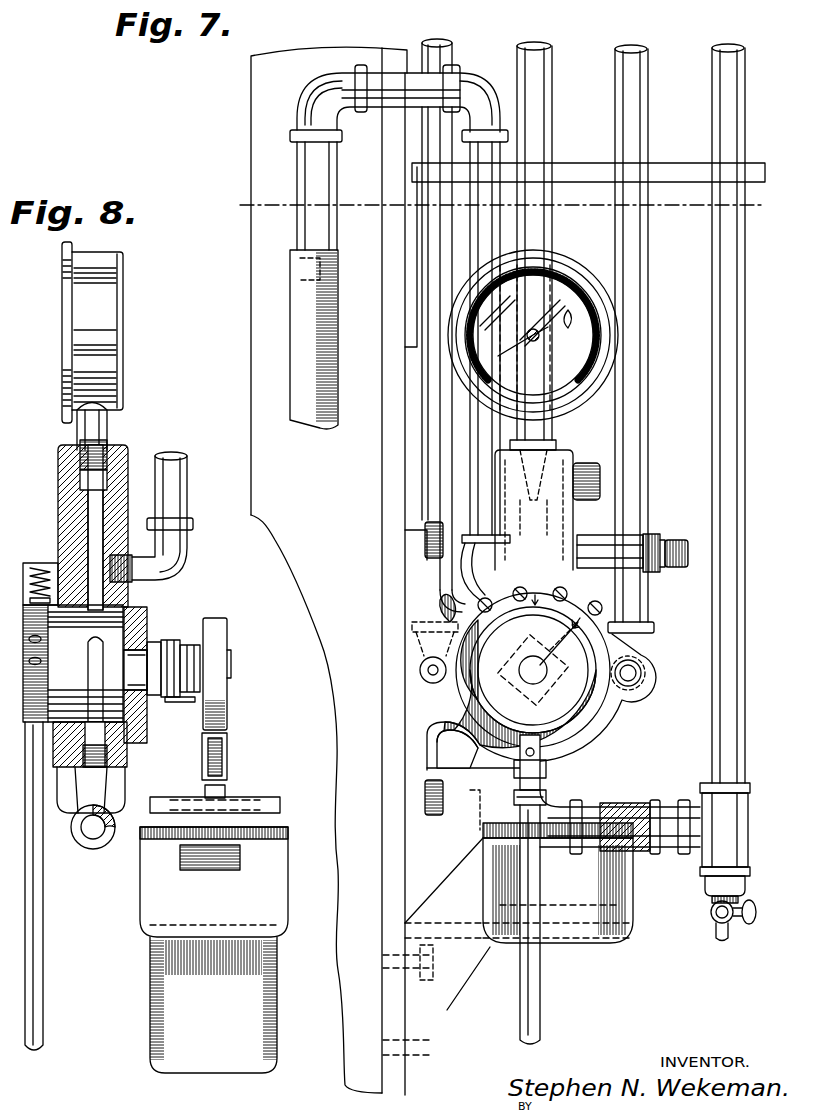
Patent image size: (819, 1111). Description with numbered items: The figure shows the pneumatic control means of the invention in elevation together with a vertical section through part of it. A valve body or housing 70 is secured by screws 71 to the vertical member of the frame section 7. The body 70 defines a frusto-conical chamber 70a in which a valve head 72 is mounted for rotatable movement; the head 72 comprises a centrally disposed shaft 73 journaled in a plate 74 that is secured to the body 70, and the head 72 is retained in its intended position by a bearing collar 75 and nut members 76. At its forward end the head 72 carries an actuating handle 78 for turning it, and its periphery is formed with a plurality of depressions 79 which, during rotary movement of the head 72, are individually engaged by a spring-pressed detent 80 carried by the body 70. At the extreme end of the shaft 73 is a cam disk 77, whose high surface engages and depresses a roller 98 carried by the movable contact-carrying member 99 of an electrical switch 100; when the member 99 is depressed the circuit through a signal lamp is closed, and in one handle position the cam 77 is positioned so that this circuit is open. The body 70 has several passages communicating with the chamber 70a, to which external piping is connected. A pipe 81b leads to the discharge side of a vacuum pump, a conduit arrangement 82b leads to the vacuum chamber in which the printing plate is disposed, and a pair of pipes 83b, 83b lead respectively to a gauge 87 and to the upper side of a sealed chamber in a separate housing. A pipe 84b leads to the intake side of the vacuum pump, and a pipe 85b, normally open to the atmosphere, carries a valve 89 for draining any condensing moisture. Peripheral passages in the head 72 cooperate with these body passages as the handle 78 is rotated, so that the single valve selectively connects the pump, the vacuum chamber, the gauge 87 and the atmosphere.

In FIG. 7, the frame section 7 is at (258, 165).
In FIG. 7, the pipe 81b is at (458, 52).
In FIG. 7, the conduit arrangement 82b is at (505, 160).
In FIG. 7, the pipe 83b is at (553, 228).
In FIG. 8, the pipe 83b is at (155, 460).
In FIG. 7, the pipe 84b is at (649, 283).
In FIG. 7, the pipe 85b is at (745, 342).
In FIG. 8, the pipe 85b is at (93, 849).
In FIG. 7, the gauge 87 is at (572, 264).
In FIG. 8, the gauge 87 is at (110, 323).
In FIG. 7, the valve 89 is at (712, 924).
In FIG. 7, the valve body 70 is at (420, 672).
In FIG. 8, the valve body 70 is at (127, 768).
In FIG. 8, the frusto-conical chamber 70a is at (65, 570).
In FIG. 7, the screws 71 is at (425, 547).
In FIG. 8, the valve head 72 is at (135, 622).
In FIG. 7, the shaft 73 is at (538, 671).
In FIG. 8, the shaft 73 is at (132, 641).
In FIG. 8, the plate 74 is at (130, 742).
In FIG. 8, the bearing collar 75 is at (158, 642).
In FIG. 8, the nut members 76 is at (170, 700).
In FIG. 7, the cam disk 77 is at (470, 692).
In FIG. 8, the cam disk 77 is at (213, 618).
In FIG. 7, the actuating handle 78 is at (542, 993).
In FIG. 8, the actuating handle 78 is at (45, 893).
In FIG. 8, the peripheral depressions 79 is at (41, 661).
In FIG. 8, the spring-pressed detent 80 is at (30, 592).
In FIG. 7, the roller 98 is at (560, 762).
In FIG. 8, the roller 98 is at (228, 750).
In FIG. 7, the contact-carrying member 99 is at (516, 797).
In FIG. 8, the contact-carrying member 99 is at (226, 790).
In FIG. 7, the electrical switch 100 is at (608, 945).
In FIG. 8, the electrical switch 100 is at (214, 935).